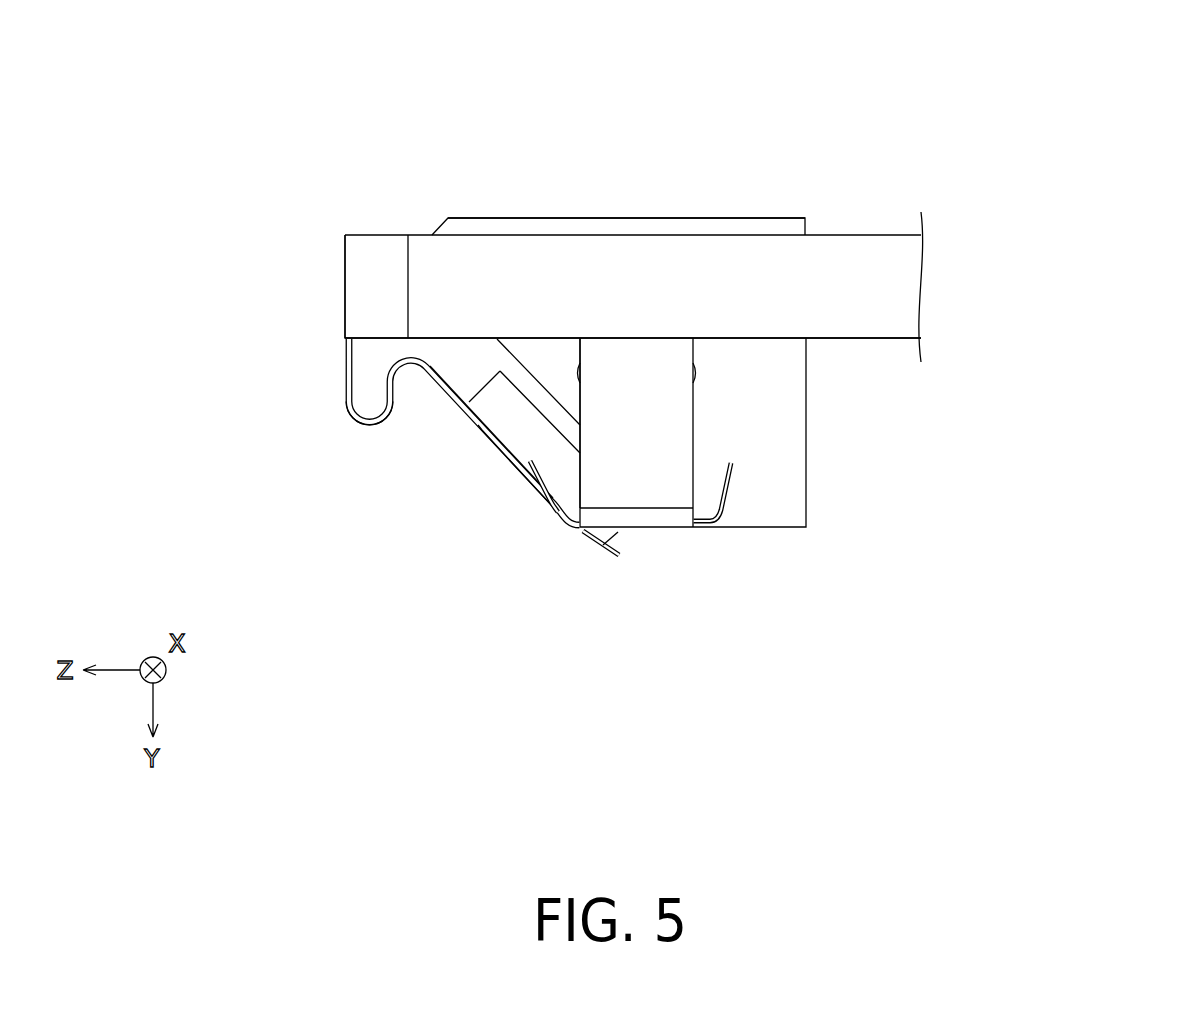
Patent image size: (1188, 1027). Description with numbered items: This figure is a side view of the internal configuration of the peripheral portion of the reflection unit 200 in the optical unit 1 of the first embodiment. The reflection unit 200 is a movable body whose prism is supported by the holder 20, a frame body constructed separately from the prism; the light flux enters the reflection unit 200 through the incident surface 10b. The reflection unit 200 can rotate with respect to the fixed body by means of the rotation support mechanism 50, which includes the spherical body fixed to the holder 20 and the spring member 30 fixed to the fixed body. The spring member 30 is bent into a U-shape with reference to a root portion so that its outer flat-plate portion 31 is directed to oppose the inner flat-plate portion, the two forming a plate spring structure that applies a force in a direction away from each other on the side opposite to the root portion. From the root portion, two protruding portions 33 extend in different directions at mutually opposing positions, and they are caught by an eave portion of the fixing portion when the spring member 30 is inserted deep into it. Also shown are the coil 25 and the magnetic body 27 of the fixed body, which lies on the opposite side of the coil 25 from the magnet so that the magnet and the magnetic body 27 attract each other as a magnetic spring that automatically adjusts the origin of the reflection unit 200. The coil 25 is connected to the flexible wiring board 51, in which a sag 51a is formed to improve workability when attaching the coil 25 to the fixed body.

The optical unit 1 is at (1062, 137).
The reflection unit 200 is at (820, 167).
The holder 20 is at (745, 228).
The incident surface 10b is at (650, 218).
The rotation support mechanism 50 is at (727, 593).
The spring member 30 is at (653, 455).
The outer flat-plate portion 31 is at (613, 432).
The flexible wiring board 51 is at (445, 287).
The sag 51a is at (367, 437).
The coil 25 is at (489, 399).
The magnetic body 27 is at (512, 448).
The protruding portion 33 is at (541, 460).